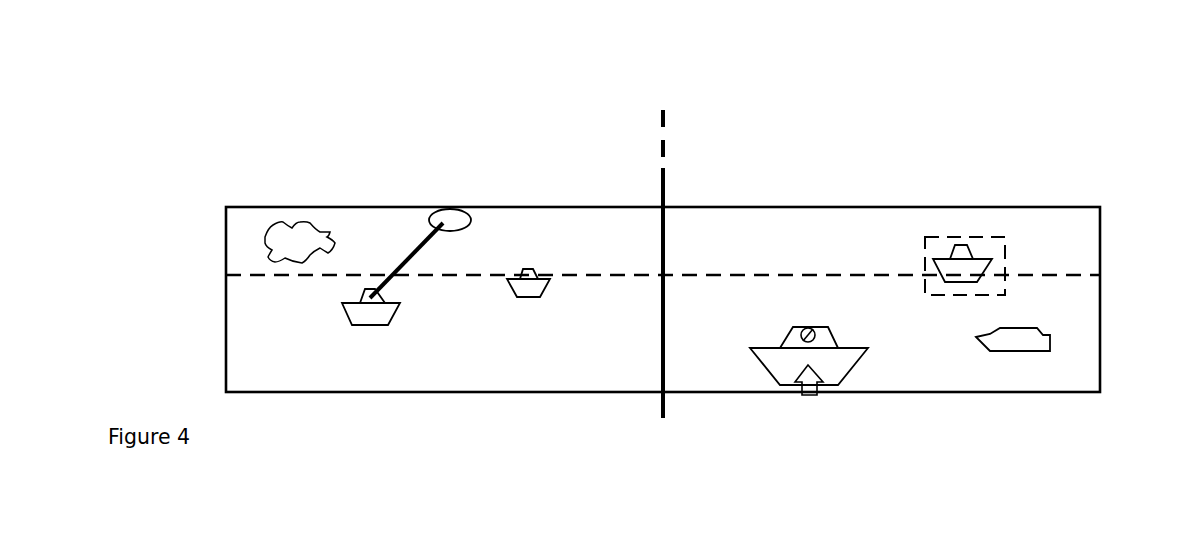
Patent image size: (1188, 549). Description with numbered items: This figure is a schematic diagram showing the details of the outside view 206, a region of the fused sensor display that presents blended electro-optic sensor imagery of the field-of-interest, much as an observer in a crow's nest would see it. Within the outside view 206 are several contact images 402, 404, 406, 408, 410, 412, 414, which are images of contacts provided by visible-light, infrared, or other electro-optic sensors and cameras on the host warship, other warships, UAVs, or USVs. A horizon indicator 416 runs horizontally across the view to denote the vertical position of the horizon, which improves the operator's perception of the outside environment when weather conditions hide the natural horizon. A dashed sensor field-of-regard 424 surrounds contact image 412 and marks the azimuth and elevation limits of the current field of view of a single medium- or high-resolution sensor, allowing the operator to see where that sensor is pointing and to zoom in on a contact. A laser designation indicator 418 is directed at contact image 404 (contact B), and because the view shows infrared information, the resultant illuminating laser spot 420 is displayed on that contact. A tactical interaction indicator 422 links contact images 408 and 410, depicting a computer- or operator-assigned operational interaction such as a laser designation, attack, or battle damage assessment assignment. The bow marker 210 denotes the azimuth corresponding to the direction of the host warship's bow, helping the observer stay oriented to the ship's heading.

The outside view 206 is at (290, 129).
The bow marker 210 is at (708, 264).
The contact image 402 is at (555, 299).
The contact image 404 is at (800, 337).
The contact image 406 is at (993, 356).
The contact image 408 is at (481, 233).
The contact image 410 is at (344, 324).
The contact image 412 is at (937, 249).
The contact image 414 is at (327, 239).
The horizon indicator 416 is at (663, 257).
The laser designation indicator 418 is at (847, 357).
The illuminating laser spot 420 is at (850, 312).
The tactical interaction indicator 422 is at (416, 270).
The sensor field-of-regard 424 is at (1004, 255).